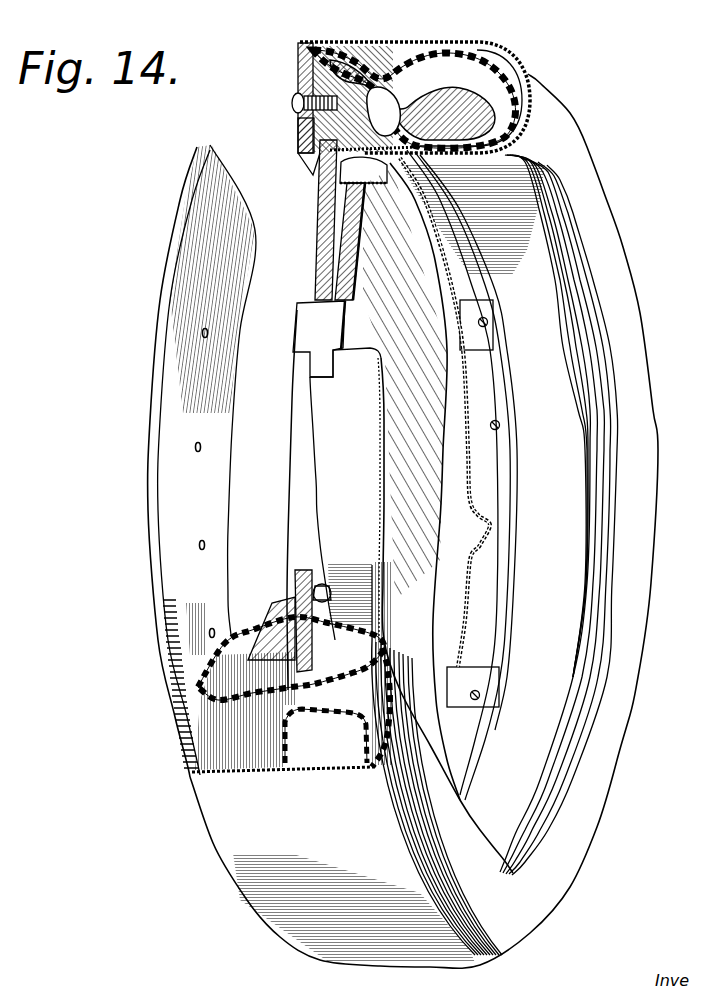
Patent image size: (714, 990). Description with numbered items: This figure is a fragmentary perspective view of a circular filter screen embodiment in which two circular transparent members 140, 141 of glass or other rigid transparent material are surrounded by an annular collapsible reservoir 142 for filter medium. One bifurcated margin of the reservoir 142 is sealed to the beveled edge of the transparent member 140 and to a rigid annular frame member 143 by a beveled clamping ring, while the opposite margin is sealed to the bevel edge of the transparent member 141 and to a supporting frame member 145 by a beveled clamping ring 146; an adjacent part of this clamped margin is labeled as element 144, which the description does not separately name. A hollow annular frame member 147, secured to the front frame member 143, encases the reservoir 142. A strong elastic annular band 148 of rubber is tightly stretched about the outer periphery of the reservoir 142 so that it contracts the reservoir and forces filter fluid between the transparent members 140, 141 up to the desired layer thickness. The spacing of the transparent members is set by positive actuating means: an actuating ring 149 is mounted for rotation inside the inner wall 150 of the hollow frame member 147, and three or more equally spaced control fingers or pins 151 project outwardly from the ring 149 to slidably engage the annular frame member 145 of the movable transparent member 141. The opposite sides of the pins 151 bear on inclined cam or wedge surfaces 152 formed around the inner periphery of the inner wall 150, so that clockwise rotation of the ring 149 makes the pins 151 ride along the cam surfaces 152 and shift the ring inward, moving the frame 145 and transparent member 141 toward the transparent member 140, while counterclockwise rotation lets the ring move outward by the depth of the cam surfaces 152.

The transparent member 140 is at (322, 200).
The transparent member 141 is at (350, 240).
The annular collapsible reservoir 142 is at (492, 77).
The rigid annular frame member 143 is at (300, 77).
The lower flange portion 144 is at (300, 126).
The supporting frame member 145 is at (400, 118).
The beveled clamping ring 146 is at (383, 22).
The hollow annular frame member 147 is at (540, 102).
The elastic annular band 148 is at (423, 60).
The actuating ring 149 is at (313, 318).
The inner wall 150 is at (342, 367).
The control fingers or pins 151 is at (288, 590).
The cam or wedge surfaces 152 is at (317, 507).